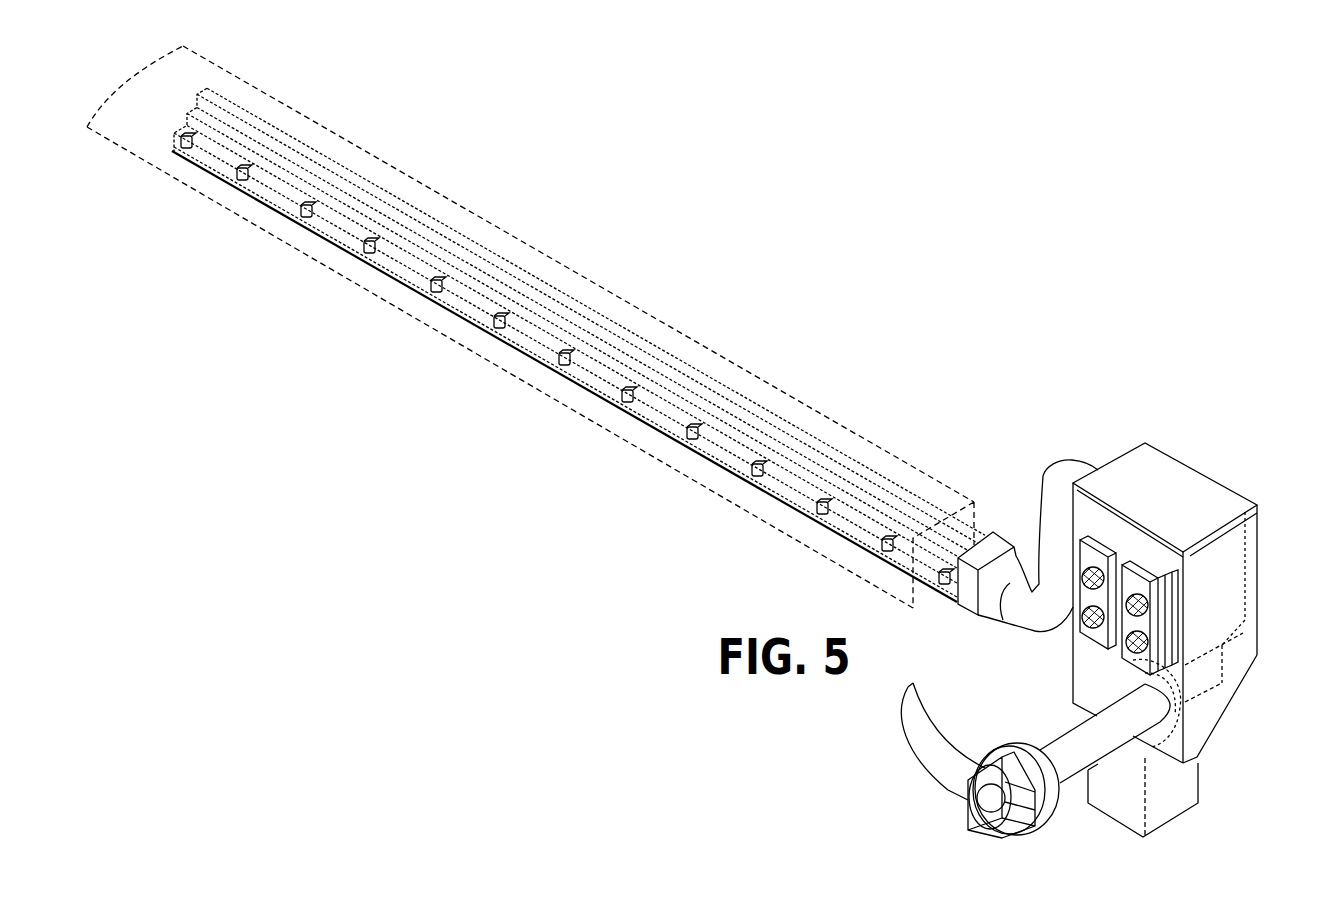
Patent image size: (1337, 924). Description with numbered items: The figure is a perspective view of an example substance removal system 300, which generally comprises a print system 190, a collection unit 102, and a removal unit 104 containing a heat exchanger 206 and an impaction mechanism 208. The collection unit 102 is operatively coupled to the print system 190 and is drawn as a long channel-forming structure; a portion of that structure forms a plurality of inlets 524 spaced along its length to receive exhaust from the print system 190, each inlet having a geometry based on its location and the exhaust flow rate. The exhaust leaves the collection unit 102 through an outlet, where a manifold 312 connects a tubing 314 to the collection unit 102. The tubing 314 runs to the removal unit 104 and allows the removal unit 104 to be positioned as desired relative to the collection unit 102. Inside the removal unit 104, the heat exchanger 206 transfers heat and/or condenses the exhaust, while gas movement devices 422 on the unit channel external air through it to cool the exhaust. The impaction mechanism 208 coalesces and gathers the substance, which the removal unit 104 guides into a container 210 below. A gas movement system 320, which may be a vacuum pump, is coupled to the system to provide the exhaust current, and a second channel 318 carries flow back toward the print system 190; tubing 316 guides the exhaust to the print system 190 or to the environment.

The substance removal system 300 is at (862, 213).
The print system 190 is at (553, 255).
The collection unit 102 is at (687, 362).
The inlets 524 is at (935, 590).
The manifold 312 is at (968, 606).
The tubing 314 is at (1041, 484).
The removal unit 104 is at (1198, 586).
The heat exchanger 206 is at (1258, 594).
The impaction mechanism 208 is at (1215, 660).
The gas movement devices 422 is at (1147, 560).
The tubing 316 is at (1080, 728).
The container 210 is at (1170, 828).
The gas movement system 320 is at (1000, 838).
The second channel 318 is at (948, 798).